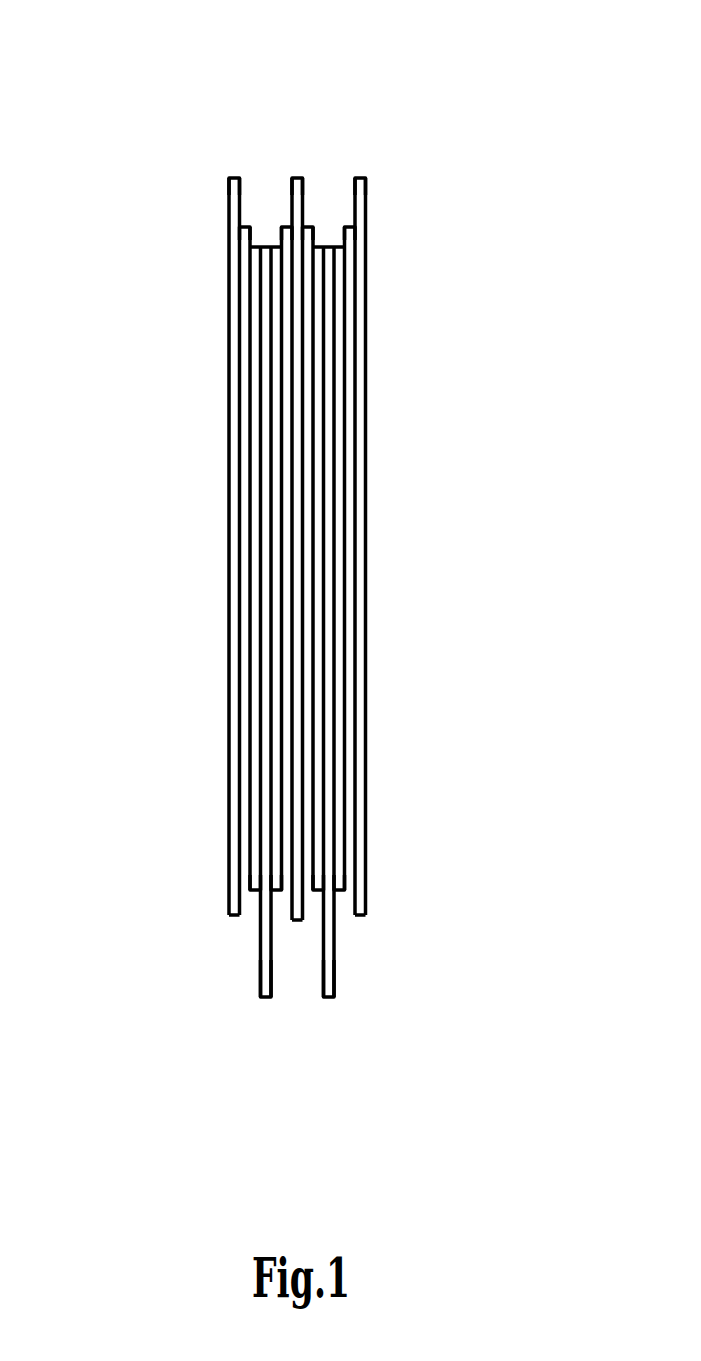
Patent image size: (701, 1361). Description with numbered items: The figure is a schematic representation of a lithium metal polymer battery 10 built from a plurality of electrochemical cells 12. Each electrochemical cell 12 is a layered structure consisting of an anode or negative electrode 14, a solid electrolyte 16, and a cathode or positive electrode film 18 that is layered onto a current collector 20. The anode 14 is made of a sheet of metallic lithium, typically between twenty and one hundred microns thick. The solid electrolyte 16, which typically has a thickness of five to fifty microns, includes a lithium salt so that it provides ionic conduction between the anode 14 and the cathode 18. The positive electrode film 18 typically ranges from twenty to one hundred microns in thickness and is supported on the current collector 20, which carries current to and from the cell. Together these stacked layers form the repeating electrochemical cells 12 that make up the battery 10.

The lithium metal polymer battery 10 is at (166, 466).
The electrochemical cell 12 is at (370, 1072).
The anode 14 is at (297, 178).
The solid electrolyte 16 is at (290, 227).
The positive electrode film 18 is at (277, 852).
The current collector 20 is at (259, 998).